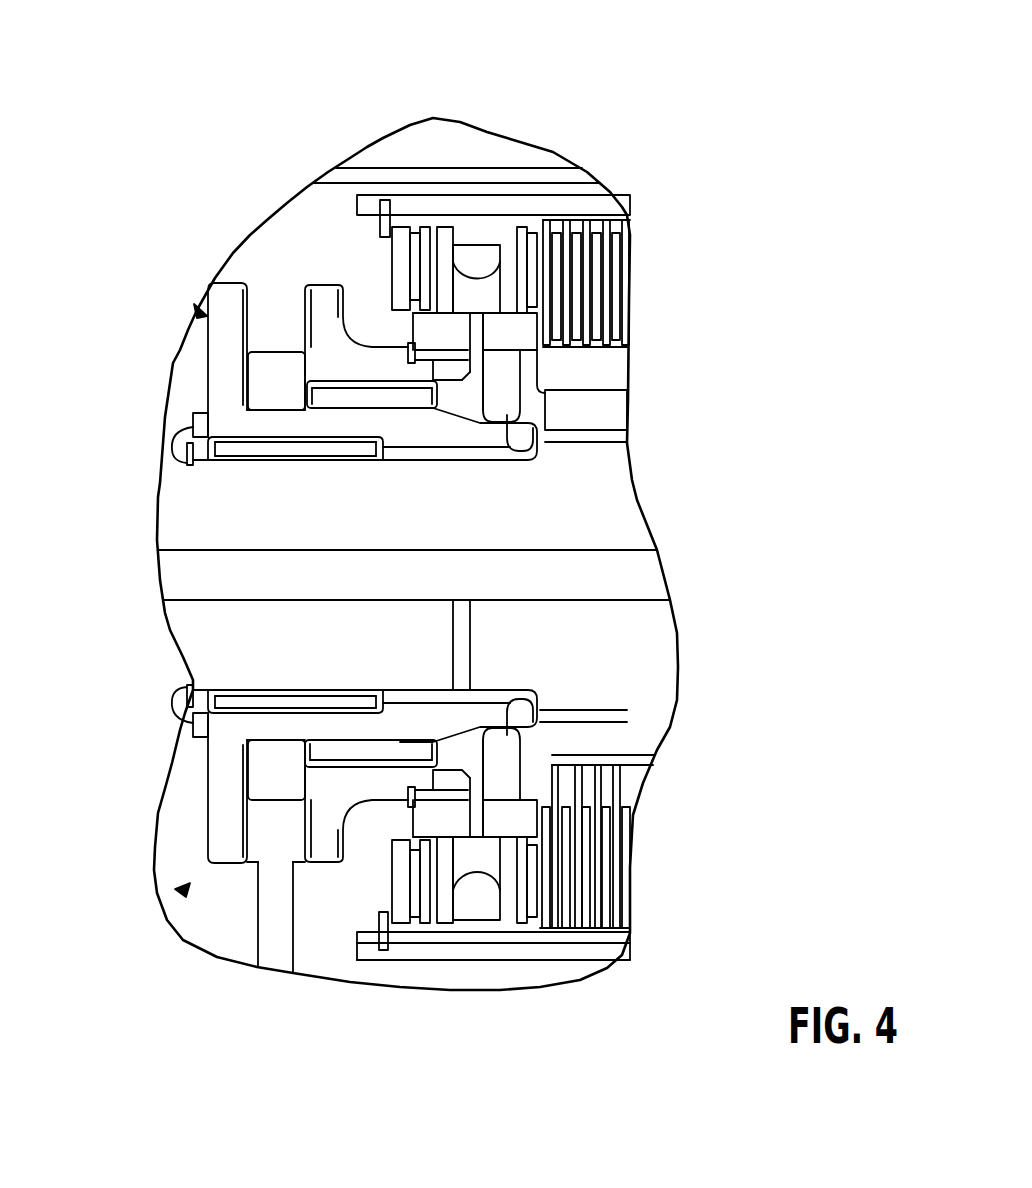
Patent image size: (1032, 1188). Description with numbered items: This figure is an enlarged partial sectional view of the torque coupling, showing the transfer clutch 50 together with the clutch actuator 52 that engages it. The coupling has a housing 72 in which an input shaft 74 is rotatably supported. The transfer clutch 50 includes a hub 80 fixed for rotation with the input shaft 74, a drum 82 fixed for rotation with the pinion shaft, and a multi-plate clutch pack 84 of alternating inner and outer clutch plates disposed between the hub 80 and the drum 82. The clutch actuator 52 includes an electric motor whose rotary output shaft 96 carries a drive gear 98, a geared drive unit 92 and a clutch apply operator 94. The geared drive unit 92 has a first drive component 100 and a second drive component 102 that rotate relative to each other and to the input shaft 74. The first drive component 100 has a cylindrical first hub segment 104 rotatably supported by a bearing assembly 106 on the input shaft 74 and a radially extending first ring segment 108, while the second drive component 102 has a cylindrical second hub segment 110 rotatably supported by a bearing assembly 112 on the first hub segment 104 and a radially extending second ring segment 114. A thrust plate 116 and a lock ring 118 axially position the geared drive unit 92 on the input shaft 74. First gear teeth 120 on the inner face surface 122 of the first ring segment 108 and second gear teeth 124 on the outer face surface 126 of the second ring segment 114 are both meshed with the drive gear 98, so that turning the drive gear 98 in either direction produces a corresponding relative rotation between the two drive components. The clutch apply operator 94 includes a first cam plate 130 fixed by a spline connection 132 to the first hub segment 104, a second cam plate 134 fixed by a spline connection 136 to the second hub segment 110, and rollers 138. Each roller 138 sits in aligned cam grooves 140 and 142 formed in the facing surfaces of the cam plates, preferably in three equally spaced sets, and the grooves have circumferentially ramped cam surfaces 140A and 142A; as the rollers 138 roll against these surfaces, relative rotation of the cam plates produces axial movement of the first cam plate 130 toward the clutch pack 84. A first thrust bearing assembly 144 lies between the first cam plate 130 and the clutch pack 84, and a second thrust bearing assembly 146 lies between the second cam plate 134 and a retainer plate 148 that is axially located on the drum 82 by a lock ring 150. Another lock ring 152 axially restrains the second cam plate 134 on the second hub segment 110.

The transfer clutch 50 is at (540, 961).
The clutch actuator 52 is at (350, 961).
The housing 72 is at (578, 175).
The input shaft 74 is at (620, 490).
The hub 80 is at (615, 412).
The drum 82 is at (600, 950).
The multi-plate clutch pack 84 is at (627, 254).
The geared drive unit 92 is at (182, 890).
The clutch apply operator 94 is at (540, 788).
The rotary output shaft 96 is at (270, 935).
The drive gear 98 is at (262, 830).
The first drive component 100 is at (200, 312).
The second drive component 102 is at (328, 292).
The first hub segment 104 is at (418, 440).
The bearing assembly 106 is at (255, 450).
The first ring segment 108 is at (227, 378).
The second hub segment 110 is at (358, 783).
The bearing assembly 112 is at (333, 752).
The second ring segment 114 is at (325, 864).
The thrust plate 116 is at (195, 722).
The lock ring 118 is at (187, 468).
The first gear teeth 120 is at (248, 298).
The inner face surface 122 is at (265, 762).
The second gear teeth 124 is at (304, 312).
The outer face surface 126 is at (300, 357).
The first cam plate 130 is at (503, 364).
The spline connection 132 is at (512, 437).
The second cam plate 134 is at (448, 910).
The spline connection 136 is at (447, 797).
The rollers 138 is at (473, 255).
The cam grooves 140 is at (480, 855).
The cam surfaces 140A is at (478, 258).
The cam grooves 142 is at (470, 855).
The cam surfaces 142A is at (462, 255).
The first thrust bearing assembly 144 is at (530, 890).
The second thrust bearing assembly 146 is at (412, 880).
The retainer plate 148 is at (400, 237).
The lock ring 150 is at (372, 923).
The lock ring 152 is at (405, 347).